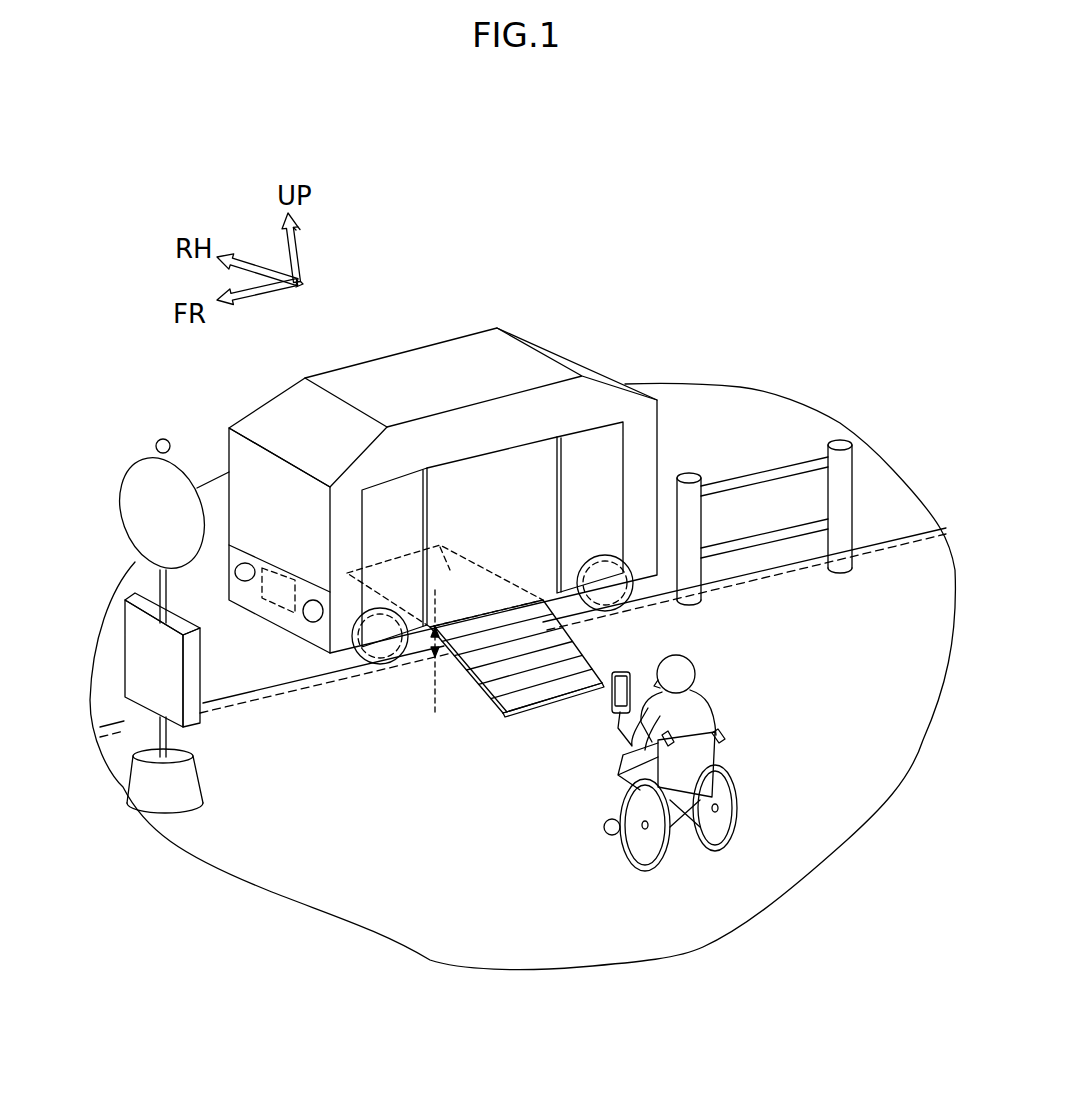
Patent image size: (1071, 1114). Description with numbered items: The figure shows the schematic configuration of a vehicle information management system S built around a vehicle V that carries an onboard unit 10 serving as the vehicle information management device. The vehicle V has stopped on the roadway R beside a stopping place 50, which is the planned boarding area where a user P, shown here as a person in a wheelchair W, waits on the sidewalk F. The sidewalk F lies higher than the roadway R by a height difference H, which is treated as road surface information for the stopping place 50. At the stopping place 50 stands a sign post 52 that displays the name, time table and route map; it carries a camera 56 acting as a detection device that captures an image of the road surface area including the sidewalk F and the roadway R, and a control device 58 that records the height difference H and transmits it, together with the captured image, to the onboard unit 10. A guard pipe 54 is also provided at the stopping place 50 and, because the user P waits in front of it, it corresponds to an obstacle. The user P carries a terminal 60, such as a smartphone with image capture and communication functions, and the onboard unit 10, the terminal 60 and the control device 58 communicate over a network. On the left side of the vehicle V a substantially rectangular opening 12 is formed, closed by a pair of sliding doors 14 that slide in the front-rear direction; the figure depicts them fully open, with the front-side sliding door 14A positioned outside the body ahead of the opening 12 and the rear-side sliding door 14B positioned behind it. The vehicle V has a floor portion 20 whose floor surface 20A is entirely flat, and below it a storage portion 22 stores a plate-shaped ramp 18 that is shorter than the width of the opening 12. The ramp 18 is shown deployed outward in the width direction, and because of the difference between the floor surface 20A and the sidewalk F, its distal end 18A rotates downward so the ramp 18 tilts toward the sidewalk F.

The onboard unit 10 is at (297, 579).
The opening 12 is at (473, 470).
The sliding doors 14 is at (476, 477).
The front-side sliding door 14A is at (383, 485).
The rear-side sliding door 14B is at (580, 432).
The ramp 18 is at (513, 721).
The distal end 18A is at (555, 702).
The floor portion 20 is at (492, 512).
The floor surface 20A is at (470, 587).
The storage portion 22 is at (440, 547).
The stopping place 50 is at (780, 388).
The sign post 52 is at (130, 452).
The guard pipe 54 is at (746, 474).
The camera 56 is at (163, 436).
The control device 58 is at (123, 640).
The terminal 60 is at (626, 672).
The vehicle V is at (398, 334).
The vehicle information management system S is at (583, 212).
The roadway R is at (873, 490).
The sidewalk F is at (895, 598).
The user P is at (700, 702).
The wheelchair W is at (740, 802).
The height difference H is at (432, 660).